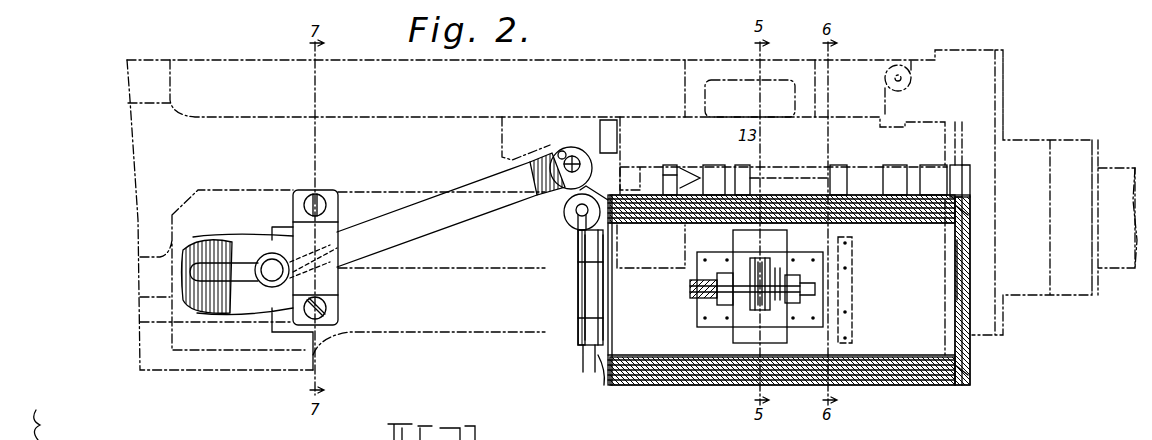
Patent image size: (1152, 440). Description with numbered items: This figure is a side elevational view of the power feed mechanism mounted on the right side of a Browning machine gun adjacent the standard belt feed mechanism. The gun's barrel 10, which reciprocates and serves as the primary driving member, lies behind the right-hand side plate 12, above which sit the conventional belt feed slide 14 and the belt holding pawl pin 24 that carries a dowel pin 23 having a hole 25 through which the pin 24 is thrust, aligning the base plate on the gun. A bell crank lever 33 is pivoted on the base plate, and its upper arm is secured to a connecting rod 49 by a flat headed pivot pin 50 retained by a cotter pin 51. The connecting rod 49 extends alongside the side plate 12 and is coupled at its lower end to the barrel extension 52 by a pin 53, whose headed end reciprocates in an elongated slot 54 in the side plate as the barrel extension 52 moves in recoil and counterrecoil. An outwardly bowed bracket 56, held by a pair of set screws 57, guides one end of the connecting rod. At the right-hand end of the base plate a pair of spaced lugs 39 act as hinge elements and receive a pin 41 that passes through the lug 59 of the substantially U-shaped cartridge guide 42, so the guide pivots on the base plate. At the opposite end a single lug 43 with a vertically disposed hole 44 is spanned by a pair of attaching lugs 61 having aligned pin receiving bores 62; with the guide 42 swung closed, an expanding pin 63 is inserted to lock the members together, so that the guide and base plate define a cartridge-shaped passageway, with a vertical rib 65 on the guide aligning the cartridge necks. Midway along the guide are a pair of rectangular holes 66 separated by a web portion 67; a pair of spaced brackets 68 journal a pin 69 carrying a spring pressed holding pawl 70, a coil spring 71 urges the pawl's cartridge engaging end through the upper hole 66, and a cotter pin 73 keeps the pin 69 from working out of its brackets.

The barrel 10 is at (1108, 178).
The side plate 12 is at (200, 242).
The belt feed slide 14 is at (702, 97).
The dowel pin 23 is at (690, 176).
The belt holding pawl pin 24 is at (780, 178).
The hole 25 is at (670, 182).
The bell crank lever 33 is at (594, 184).
The lugs 39 is at (970, 362).
The pin 41 is at (962, 172).
The cartridge guide 42 is at (789, 290).
The lug 43 is at (580, 284).
The hole 44 is at (600, 290).
The connecting rod 49 is at (480, 185).
The pivot pin 50 is at (574, 158).
The cotter pin 51 is at (557, 152).
The barrel extension 52 is at (228, 266).
The pin 53 is at (285, 268).
The elongated slot 54 is at (250, 280).
The bracket 56 is at (325, 228).
The set screws 57 is at (320, 200).
The lug 59 is at (966, 282).
The attaching lugs 61 is at (578, 243).
The pin receiving bores 62 is at (600, 243).
The expanding pin 63 is at (565, 212).
The rib 65 is at (852, 276).
The rectangular holes 66 is at (735, 338).
The web portion 67 is at (753, 310).
The brackets 68 is at (790, 277).
The pin 69 is at (690, 284).
The holding pawl 70 is at (780, 242).
The coil spring 71 is at (763, 310).
The cotter pin 73 is at (790, 312).